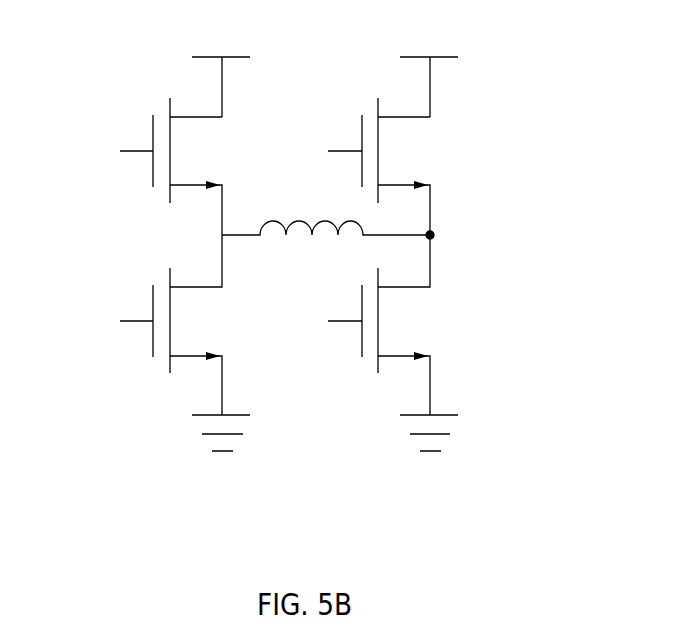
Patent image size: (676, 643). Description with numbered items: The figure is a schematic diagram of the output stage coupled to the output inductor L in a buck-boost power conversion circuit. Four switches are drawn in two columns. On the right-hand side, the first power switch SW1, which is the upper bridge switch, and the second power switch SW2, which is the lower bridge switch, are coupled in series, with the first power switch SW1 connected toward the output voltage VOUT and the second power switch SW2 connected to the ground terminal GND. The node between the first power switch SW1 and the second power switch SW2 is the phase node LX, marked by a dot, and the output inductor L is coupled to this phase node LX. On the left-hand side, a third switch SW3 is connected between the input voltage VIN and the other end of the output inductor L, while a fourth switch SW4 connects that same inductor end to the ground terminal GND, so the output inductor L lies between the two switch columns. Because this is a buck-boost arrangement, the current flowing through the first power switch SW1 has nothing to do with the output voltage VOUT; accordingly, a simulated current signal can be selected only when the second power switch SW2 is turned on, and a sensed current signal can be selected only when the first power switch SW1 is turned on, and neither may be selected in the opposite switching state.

The first power switch SW1 is at (396, 166).
The second power switch SW2 is at (395, 325).
The third switch (transistor) SW3 is at (188, 166).
The fourth switch (transistor) SW4 is at (188, 325).
The output inductor L is at (326, 211).
The phase node LX is at (453, 235).
The input voltage VIN is at (221, 72).
The output voltage VOUT is at (429, 72).
The ground terminal GND is at (327, 450).